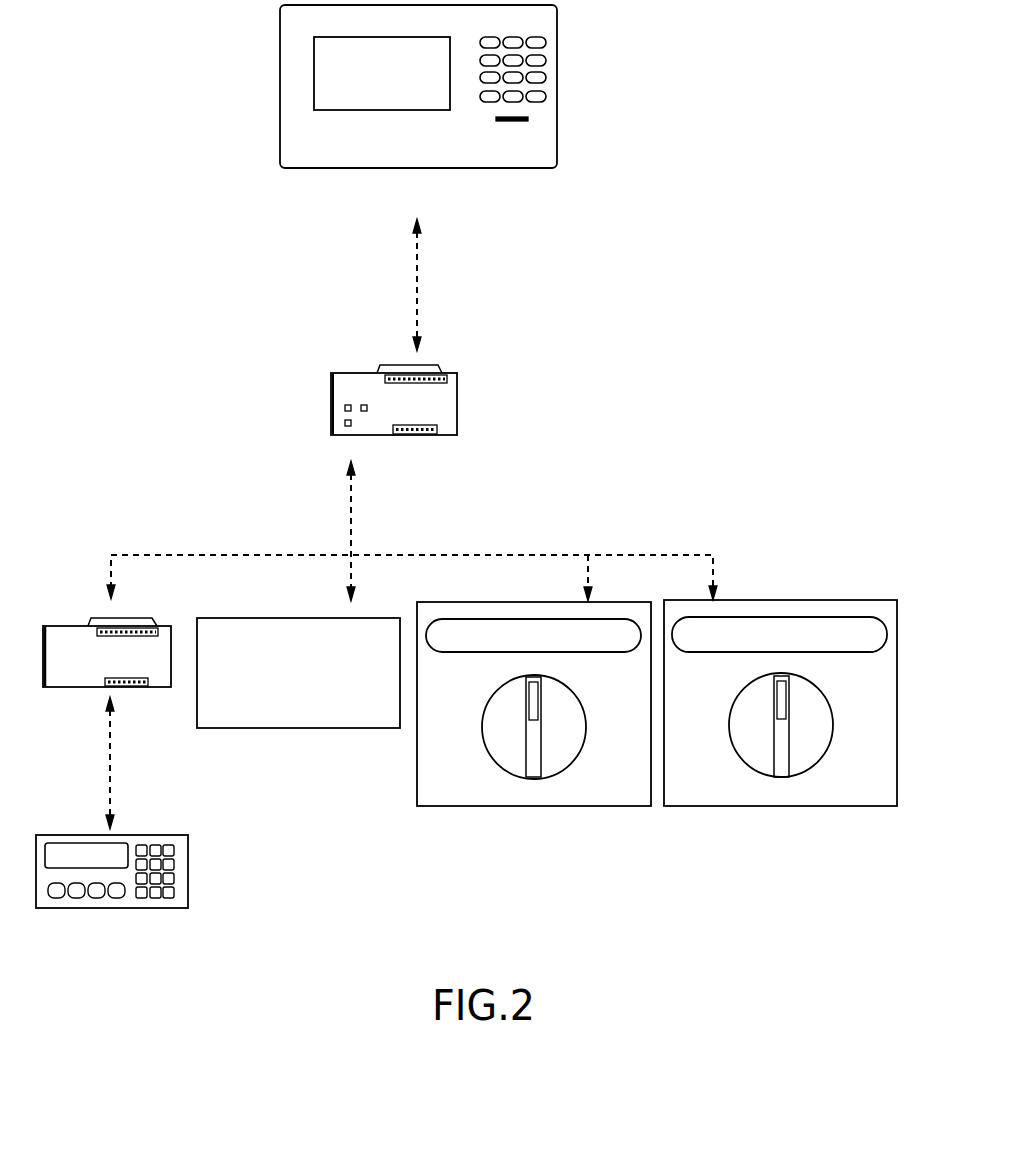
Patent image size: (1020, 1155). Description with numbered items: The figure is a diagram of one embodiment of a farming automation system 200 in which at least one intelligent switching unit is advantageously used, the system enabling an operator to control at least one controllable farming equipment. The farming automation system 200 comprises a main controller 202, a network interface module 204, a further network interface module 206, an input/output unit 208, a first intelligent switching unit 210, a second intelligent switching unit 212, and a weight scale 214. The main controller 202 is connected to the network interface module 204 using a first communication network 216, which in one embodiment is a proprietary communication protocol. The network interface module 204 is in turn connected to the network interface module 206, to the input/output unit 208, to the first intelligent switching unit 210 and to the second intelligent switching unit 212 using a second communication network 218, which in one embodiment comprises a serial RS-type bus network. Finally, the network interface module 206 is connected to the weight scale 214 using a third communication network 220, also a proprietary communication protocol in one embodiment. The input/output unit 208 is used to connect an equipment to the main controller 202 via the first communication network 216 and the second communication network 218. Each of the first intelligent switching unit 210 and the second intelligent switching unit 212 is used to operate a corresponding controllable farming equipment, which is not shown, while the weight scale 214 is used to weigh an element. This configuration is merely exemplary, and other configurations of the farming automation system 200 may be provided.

The farming automation system 200 is at (188, 316).
The main controller 202 is at (557, 102).
The network interface module 204 is at (458, 400).
The network interface module 206 is at (74, 626).
The input/output unit 208 is at (332, 728).
The first intelligent switching unit 210 is at (592, 806).
The second intelligent switching unit 212 is at (805, 600).
The weight scale 214 is at (189, 872).
The first communication network 216 is at (417, 287).
The second communication network 218 is at (450, 555).
The third communication network 220 is at (112, 748).